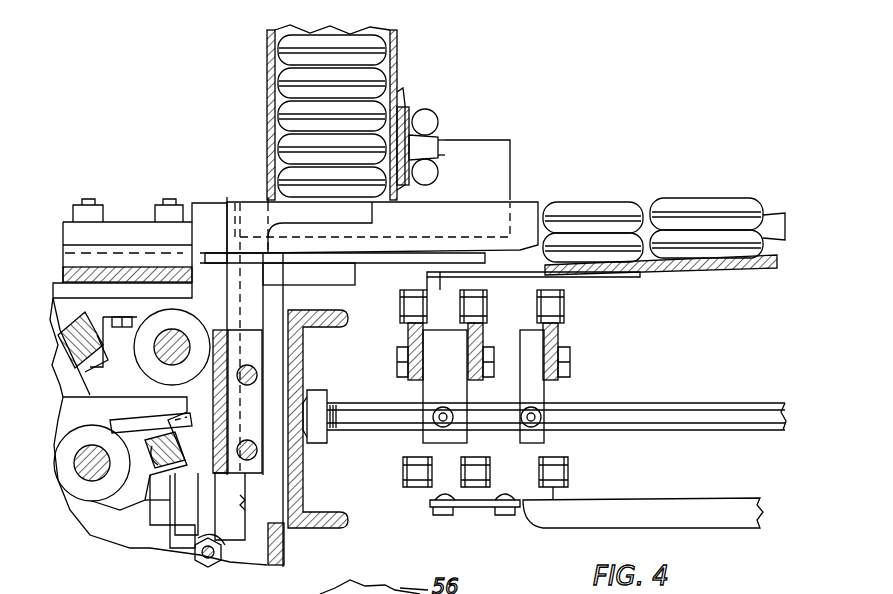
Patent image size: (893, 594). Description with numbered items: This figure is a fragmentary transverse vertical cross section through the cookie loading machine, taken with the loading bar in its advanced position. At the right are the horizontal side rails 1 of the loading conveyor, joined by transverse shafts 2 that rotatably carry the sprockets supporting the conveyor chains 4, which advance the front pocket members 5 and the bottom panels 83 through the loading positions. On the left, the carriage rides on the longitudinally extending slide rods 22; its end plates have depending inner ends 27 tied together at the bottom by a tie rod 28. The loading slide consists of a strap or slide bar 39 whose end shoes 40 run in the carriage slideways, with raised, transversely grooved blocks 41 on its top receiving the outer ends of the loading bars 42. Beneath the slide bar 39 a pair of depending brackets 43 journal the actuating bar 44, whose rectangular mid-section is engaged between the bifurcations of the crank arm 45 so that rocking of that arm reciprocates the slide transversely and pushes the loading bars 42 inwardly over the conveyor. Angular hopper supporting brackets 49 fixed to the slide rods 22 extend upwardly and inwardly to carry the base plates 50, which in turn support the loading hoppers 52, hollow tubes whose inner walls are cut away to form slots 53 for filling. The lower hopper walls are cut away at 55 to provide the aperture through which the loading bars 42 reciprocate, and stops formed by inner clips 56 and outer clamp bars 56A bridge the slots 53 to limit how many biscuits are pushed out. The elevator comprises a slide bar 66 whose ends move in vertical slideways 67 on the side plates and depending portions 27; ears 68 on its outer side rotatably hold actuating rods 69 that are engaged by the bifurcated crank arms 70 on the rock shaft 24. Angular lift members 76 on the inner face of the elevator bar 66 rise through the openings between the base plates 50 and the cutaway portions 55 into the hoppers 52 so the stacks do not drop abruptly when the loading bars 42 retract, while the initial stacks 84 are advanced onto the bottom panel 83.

The side rails 1 is at (306, 358).
The transverse shafts 2 is at (372, 430).
The conveyor chains 4 is at (565, 305).
The front pocket members 5 is at (770, 240).
The slide rods 22 is at (130, 397).
The rock shaft 24 is at (85, 482).
The depending inner ends 27 is at (182, 545).
The tie rod 28 is at (206, 562).
The slide bar 39 is at (118, 270).
The shoes 40 is at (157, 290).
The raised blocks 41 is at (138, 255).
The loading bars 42 is at (208, 213).
The depending brackets 43 is at (95, 337).
The actuating bar 44 is at (155, 350).
The crank arm 45 is at (70, 397).
The hopper supporting brackets 49 is at (298, 280).
The base plates 50 is at (368, 270).
The loading hoppers 52 is at (267, 70).
The slots 53 is at (396, 68).
The cutaway portions 55 is at (265, 200).
The inner clips 56 is at (404, 100).
The outer clamp bars 56A is at (420, 110).
The elevator slide bar 66 is at (210, 403).
The vertical slideways 67 is at (225, 488).
The ears 68 is at (202, 431).
The actuating rods 69 is at (150, 440).
The crank arms 70 is at (135, 487).
The angular lift members 76 is at (306, 218).
The bottom panels 83 is at (645, 275).
The initial stacks 84 is at (716, 200).